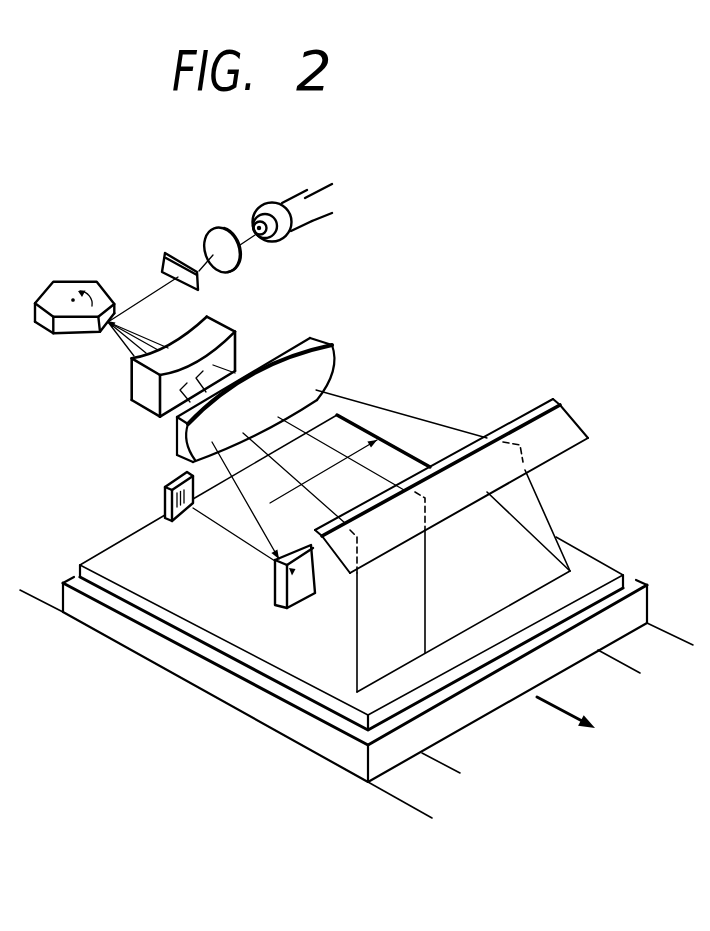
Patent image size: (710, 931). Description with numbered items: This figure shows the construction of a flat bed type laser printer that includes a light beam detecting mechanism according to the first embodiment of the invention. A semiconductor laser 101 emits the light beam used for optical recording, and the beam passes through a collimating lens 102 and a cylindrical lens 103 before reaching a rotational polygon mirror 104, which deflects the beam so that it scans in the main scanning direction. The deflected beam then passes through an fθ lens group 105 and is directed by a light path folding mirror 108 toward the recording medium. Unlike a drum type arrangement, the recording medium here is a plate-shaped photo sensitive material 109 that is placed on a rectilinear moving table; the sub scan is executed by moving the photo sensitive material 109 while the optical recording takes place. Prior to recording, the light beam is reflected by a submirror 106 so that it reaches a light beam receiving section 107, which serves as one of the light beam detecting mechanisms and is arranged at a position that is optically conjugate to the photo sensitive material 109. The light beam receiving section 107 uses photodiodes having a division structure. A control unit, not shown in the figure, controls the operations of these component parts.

The semiconductor laser 101 is at (281, 202).
The collimating lens 102 is at (223, 227).
The cylindrical lens 103 is at (173, 252).
The rotational polygon mirror 104 is at (90, 290).
The fθ lens group 105 is at (361, 340).
The submirror 106 is at (303, 597).
The light beam receiving section 107 is at (164, 484).
The light path folding mirror 108 is at (565, 416).
The photo sensitive material 109 is at (603, 562).